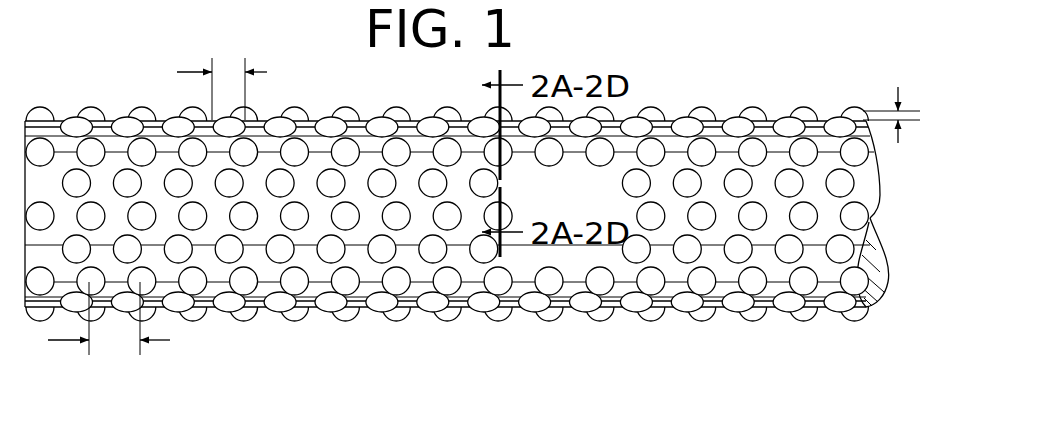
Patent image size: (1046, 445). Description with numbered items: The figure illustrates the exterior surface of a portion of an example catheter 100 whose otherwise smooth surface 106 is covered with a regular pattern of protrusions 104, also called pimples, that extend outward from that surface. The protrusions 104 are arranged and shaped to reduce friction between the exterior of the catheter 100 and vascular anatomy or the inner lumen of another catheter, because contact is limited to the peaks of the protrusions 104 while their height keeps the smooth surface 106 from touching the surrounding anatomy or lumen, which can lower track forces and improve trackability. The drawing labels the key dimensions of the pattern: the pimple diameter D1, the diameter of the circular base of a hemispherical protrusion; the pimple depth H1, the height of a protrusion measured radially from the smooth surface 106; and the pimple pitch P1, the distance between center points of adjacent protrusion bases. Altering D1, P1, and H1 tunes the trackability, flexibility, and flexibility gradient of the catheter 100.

The catheter 100 is at (457, 210).
The protrusions 104 is at (293, 282).
The smooth surface 106 is at (722, 154).
The pimple diameter D1 is at (222, 71).
The pimple depth H1 is at (891, 102).
The pimple pitch P1 is at (109, 318).